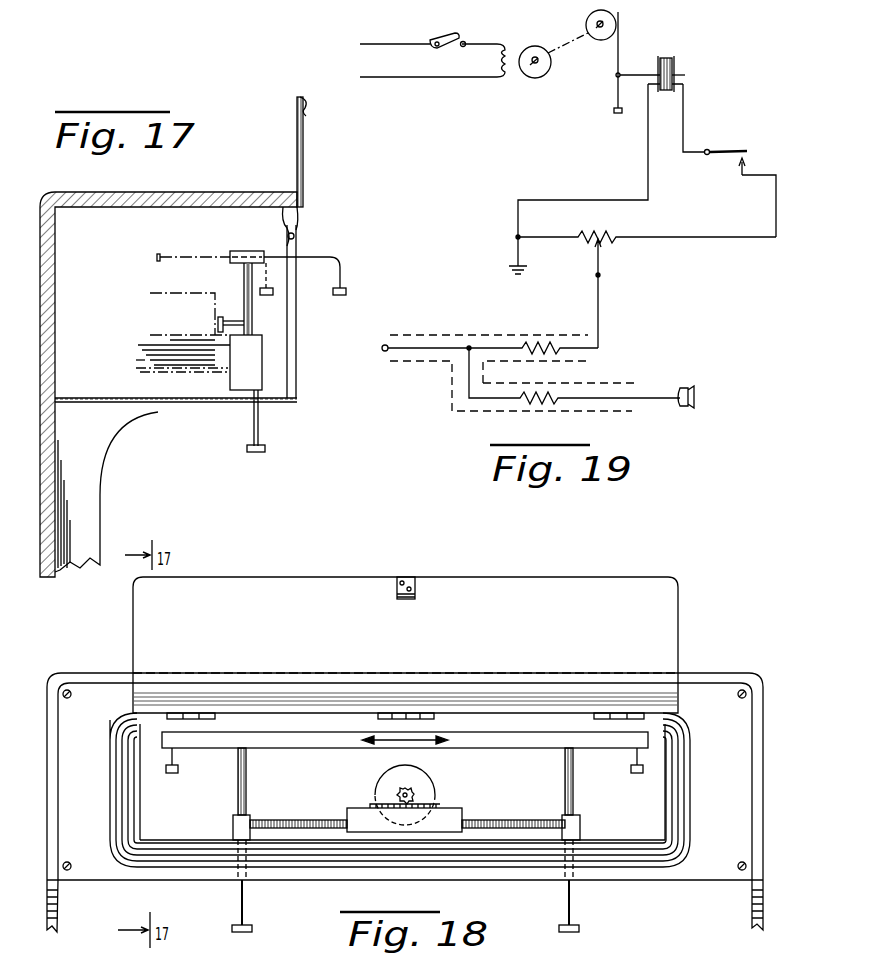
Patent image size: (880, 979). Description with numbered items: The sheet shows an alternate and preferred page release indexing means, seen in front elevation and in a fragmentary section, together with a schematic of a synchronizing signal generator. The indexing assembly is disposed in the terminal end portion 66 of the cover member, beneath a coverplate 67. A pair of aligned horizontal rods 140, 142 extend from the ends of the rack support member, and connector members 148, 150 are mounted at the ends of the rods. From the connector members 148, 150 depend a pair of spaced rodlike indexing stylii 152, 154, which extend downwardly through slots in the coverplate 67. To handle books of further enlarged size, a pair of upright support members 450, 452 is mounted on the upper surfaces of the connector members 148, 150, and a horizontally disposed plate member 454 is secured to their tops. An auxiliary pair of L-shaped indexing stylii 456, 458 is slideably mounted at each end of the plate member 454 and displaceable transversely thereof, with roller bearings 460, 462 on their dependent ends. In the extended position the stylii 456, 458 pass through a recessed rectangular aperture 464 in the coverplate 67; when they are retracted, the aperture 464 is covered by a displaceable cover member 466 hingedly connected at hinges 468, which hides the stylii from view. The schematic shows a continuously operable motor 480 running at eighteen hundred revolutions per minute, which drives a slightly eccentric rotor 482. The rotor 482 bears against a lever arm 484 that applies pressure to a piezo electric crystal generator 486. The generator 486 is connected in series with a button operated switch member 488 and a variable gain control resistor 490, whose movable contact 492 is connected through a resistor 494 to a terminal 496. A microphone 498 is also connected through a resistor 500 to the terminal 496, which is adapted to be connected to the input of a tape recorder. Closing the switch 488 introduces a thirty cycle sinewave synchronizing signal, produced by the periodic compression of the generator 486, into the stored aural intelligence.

In FIG. 17, the terminal end portion 66 is at (45, 210).
In FIG. 18, the terminal end portion 66 is at (737, 675).
In FIG. 18, the coverplate 67 is at (716, 700).
In FIG. 18, the rod 140 is at (313, 820).
In FIG. 18, the rod 142 is at (528, 820).
In FIG. 18, the connector member 148 is at (232, 825).
In FIG. 18, the connector member 150 is at (580, 823).
In FIG. 17, the indexing stylus 152 is at (259, 420).
In FIG. 18, the indexing stylus 152 is at (244, 896).
In FIG. 18, the indexing stylus 154 is at (572, 900).
In FIG. 17, the upright support member 450 is at (244, 300).
In FIG. 18, the upright support member 450 is at (247, 771).
In FIG. 17, the upright support member 452 is at (243, 281).
In FIG. 18, the upright support member 452 is at (574, 779).
In FIG. 17, the plate member 454 is at (246, 251).
In FIG. 18, the plate member 454 is at (502, 748).
In FIG. 17, the auxiliary indexing stylus 456 is at (316, 276).
In FIG. 18, the auxiliary indexing stylus 456 is at (178, 759).
In FIG. 18, the auxiliary indexing stylus 458 is at (633, 766).
In FIG. 17, the roller bearing 460 is at (275, 300).
In FIG. 18, the roller bearing 460 is at (170, 775).
In FIG. 18, the roller bearing 462 is at (640, 774).
In FIG. 18, the recessed rectangular aperture 464 is at (670, 757).
In FIG. 17, the displaceable cover member 466 is at (303, 137).
In FIG. 18, the displaceable cover member 466 is at (574, 577).
In FIG. 18, the hinge 468 is at (195, 713).
In FIG. 19, the motor 480 is at (528, 76).
In FIG. 19, the eccentric rotor 482 is at (599, 40).
In FIG. 19, the lever arm 484 is at (622, 52).
In FIG. 19, the piezo electric crystal generator 486 is at (674, 65).
In FIG. 19, the button operated switch member 488 is at (734, 151).
In FIG. 19, the variable gain control resistor 490 is at (612, 236).
In FIG. 19, the movable contact 492 is at (600, 276).
In FIG. 19, the resistor 494 is at (553, 324).
In FIG. 19, the terminal 496 is at (383, 342).
In FIG. 19, the microphone 498 is at (688, 408).
In FIG. 19, the resistor 500 is at (556, 396).